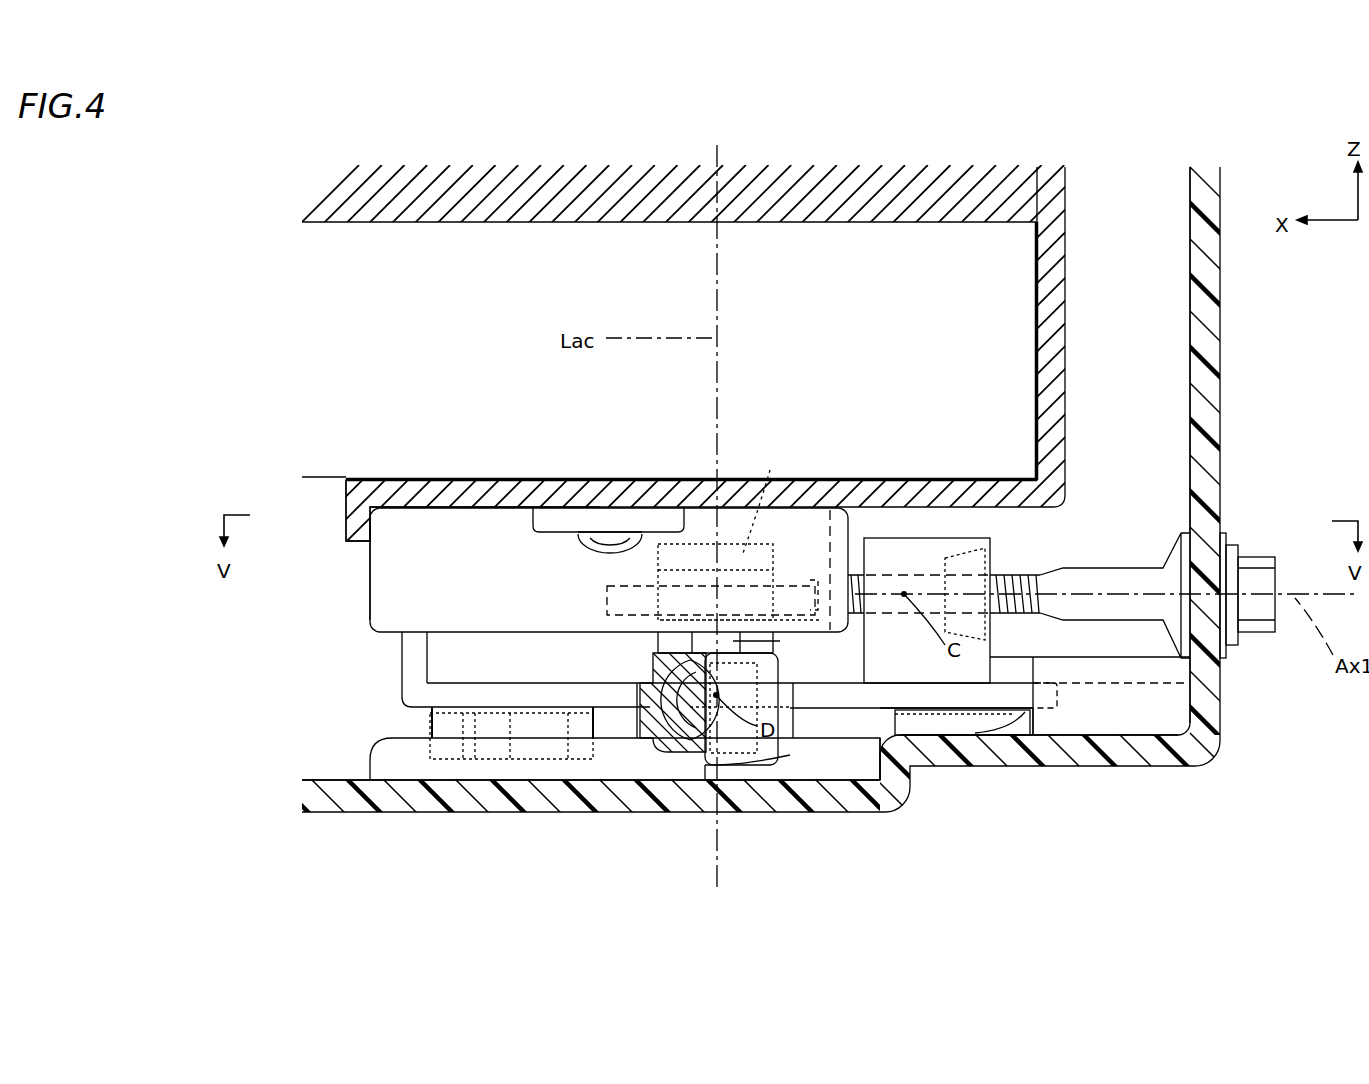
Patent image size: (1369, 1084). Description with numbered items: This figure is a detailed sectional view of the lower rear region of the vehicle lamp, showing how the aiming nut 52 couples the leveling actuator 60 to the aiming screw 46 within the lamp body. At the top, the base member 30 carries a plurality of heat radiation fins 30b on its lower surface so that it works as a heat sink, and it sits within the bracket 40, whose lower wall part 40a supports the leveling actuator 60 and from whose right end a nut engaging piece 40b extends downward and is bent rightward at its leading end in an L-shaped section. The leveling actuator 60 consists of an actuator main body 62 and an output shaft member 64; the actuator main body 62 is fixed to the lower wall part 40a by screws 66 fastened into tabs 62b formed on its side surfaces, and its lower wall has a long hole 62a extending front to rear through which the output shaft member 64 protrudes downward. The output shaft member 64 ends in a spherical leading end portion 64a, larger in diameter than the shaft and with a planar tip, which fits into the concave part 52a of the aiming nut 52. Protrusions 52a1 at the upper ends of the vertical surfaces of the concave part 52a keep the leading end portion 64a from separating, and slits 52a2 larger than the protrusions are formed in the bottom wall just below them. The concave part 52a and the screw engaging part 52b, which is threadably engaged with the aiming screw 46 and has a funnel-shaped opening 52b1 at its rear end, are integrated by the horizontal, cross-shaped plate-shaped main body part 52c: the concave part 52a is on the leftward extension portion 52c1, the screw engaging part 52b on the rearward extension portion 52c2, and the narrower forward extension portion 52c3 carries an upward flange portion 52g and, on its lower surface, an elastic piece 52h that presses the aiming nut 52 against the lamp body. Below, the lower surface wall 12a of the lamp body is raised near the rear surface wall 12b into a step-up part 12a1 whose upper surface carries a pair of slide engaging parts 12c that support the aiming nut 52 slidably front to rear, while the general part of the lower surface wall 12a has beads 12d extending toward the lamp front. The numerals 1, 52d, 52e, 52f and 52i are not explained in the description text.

The display device 1 is at (1221, 452).
The lower surface wall 12a is at (420, 795).
The step-up part 12a1 is at (1125, 755).
The rear surface wall 12b is at (1212, 382).
The slide engaging parts 12c is at (1085, 668).
The beads 12d is at (392, 752).
The base member 30 is at (940, 224).
The heat radiation fins 30b is at (340, 460).
The bracket 40 is at (1064, 262).
The lower wall part 40a is at (588, 484).
The nut engaging piece 40b is at (607, 600).
The aiming screw 46 is at (1085, 566).
The aiming nut 52 is at (926, 538).
The concave part 52a is at (767, 672).
The protrusions 52a1 is at (700, 660).
The slits 52a2 is at (683, 742).
The screw engaging part 52b is at (893, 552).
The funnel-shaped opening 52b1 is at (1075, 545).
The plate-shaped main body part 52c is at (820, 700).
The leftward extension portion 52c1 is at (640, 693).
The rearward extension portion 52c2 is at (928, 700).
The forward extension portion 52c3 is at (487, 690).
The holder 52d is at (752, 758).
The spacer 52e is at (963, 725).
The lower lip 52f is at (730, 773).
The flange portion 52g is at (408, 660).
The elastic piece 52h is at (525, 745).
The hidden hole 52i is at (768, 500).
The leveling actuator 60 is at (371, 627).
The actuator main body 62 is at (388, 585).
The long hole 62a is at (648, 612).
The tabs 62b is at (557, 524).
The output shaft member 64 is at (780, 641).
The leading end portion 64a is at (660, 673).
The screws 66 is at (603, 553).